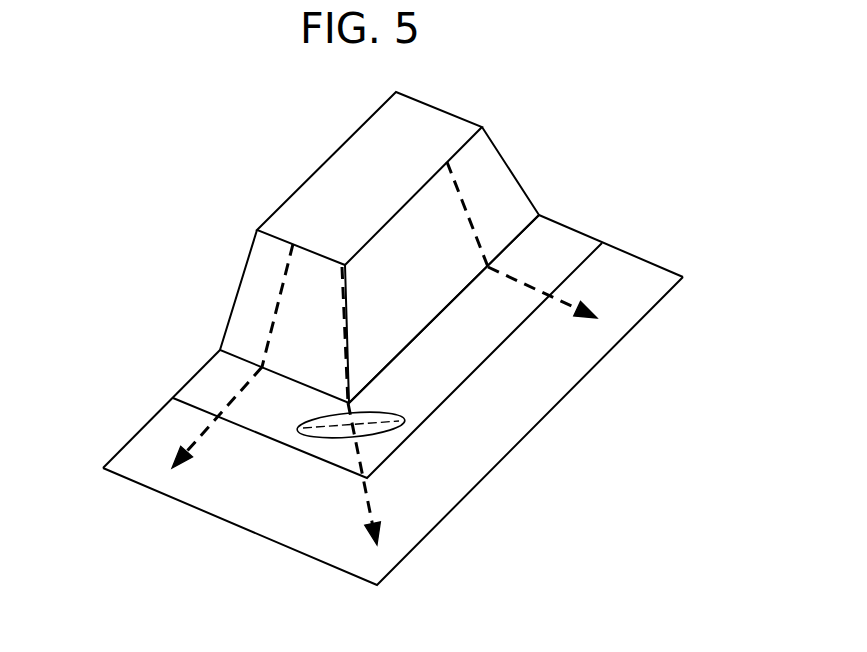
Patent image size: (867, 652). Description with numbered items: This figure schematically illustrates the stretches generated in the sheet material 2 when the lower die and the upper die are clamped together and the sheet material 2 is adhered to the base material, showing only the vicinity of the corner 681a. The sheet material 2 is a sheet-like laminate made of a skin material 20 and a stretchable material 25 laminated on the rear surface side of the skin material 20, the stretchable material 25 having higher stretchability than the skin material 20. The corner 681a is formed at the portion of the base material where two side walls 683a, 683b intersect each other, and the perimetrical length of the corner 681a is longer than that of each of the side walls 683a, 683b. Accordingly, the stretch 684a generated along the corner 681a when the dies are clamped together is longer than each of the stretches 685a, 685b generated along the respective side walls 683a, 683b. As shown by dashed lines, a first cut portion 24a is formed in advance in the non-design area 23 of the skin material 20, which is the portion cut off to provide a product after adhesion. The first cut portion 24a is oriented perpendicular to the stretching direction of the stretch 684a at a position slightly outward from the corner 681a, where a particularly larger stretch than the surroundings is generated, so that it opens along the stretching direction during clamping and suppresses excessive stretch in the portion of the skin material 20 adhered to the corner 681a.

The sheet material 2 is at (667, 248).
The skin material 20 is at (490, 357).
The non-design area 23 is at (483, 308).
The stretchable material 25 is at (543, 423).
The first cut portion 24a is at (330, 427).
The corner 681a is at (335, 337).
The side wall 683a is at (258, 295).
The side wall 683b is at (487, 190).
The stretch 684a is at (365, 482).
The stretch 685a is at (202, 437).
The stretch 685b is at (530, 283).